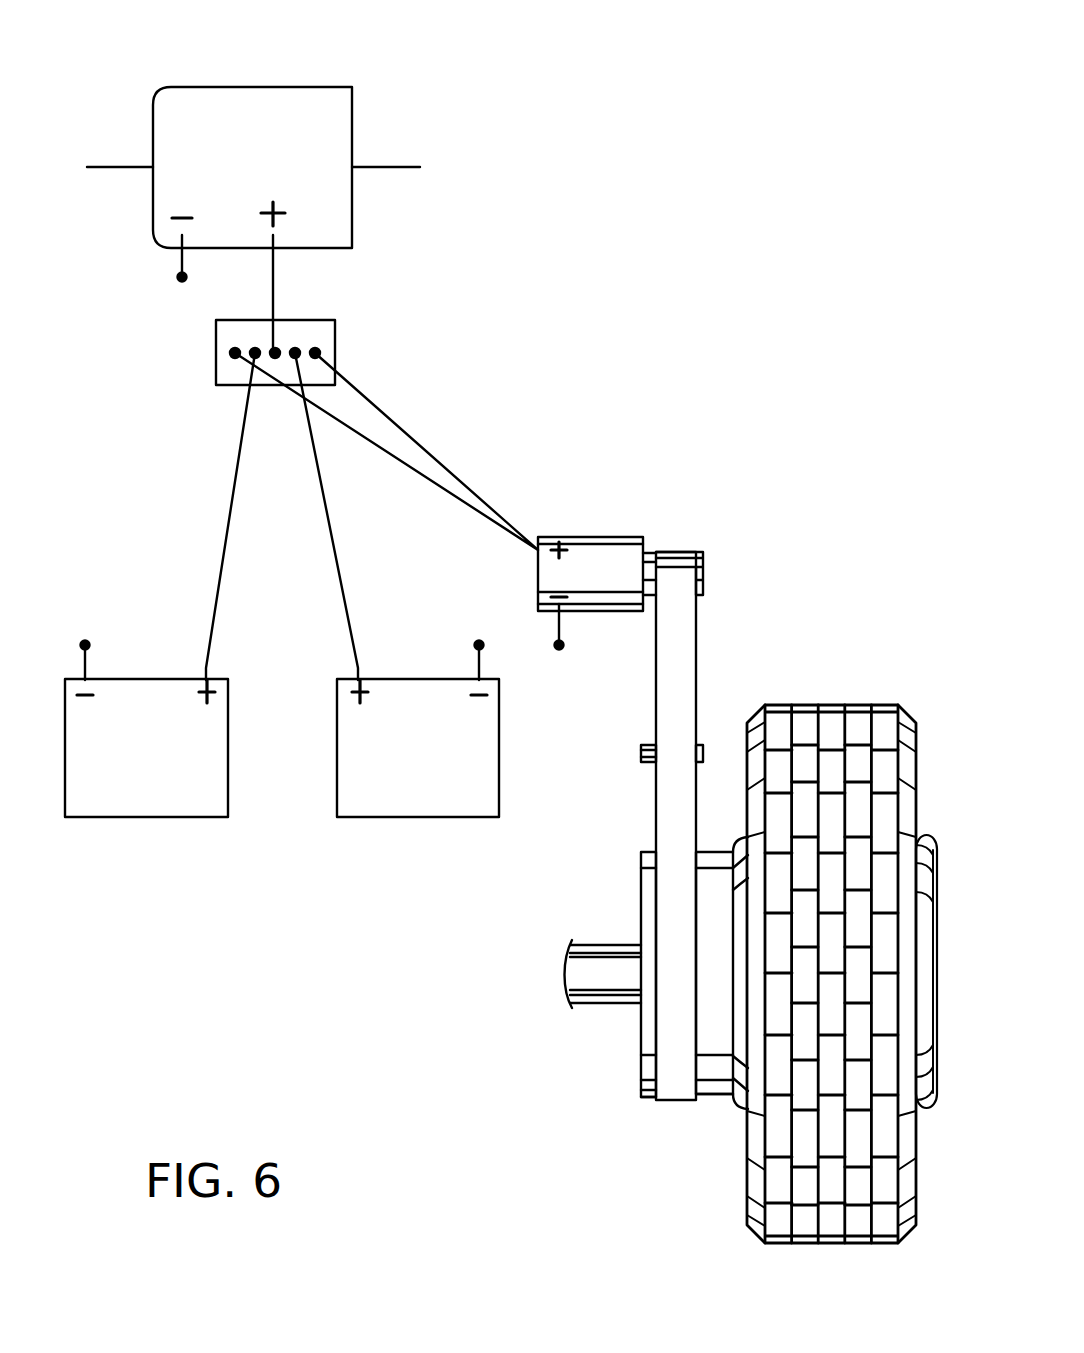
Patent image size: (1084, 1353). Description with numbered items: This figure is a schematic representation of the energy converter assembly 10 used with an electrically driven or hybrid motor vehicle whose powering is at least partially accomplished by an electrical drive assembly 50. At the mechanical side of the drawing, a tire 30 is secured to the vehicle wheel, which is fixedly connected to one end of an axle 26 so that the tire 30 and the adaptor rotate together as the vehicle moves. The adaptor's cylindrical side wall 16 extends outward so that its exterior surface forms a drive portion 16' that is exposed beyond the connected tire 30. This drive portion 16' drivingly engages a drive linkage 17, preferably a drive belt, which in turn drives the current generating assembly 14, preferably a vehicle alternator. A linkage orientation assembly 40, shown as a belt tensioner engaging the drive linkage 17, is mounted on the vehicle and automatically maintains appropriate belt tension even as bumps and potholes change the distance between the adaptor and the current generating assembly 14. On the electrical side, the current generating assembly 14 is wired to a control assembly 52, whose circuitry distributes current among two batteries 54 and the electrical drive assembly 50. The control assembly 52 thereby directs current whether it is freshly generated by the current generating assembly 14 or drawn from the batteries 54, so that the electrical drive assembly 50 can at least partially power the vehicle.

The energy converter assembly 10 is at (586, 1071).
The current generating assembly 14 is at (615, 525).
The side wall 16 is at (666, 1152).
The drive portion 16' is at (634, 973).
The drive linkage 17 is at (685, 640).
The axle 26 is at (590, 973).
The tire 30 is at (781, 1178).
The linkage orientation assembly 40 is at (641, 750).
The electrical drive assembly 50 is at (366, 76).
The control assembly 52 is at (360, 326).
The batteries 54 is at (127, 792).